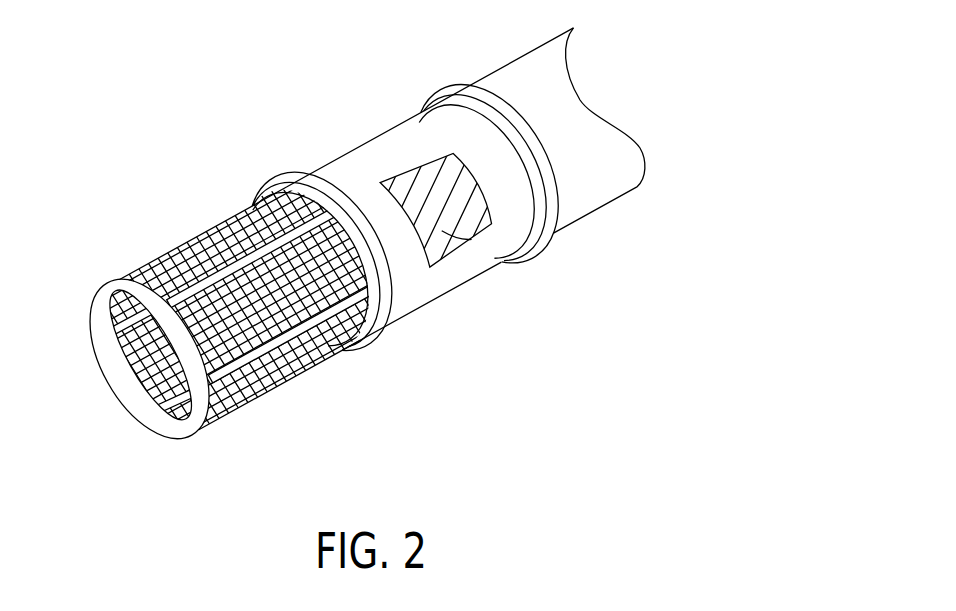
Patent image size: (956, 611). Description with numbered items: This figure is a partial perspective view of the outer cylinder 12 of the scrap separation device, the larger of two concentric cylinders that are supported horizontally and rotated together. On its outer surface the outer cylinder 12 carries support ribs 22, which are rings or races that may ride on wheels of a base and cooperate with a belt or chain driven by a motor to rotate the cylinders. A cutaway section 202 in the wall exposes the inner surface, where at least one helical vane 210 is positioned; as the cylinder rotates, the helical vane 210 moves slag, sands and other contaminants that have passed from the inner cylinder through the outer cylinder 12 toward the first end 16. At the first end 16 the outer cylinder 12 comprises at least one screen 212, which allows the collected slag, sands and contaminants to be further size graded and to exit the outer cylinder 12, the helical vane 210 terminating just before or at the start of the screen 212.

The outer cylinder 12 is at (360, 261).
The first end 16 is at (179, 434).
The support ribs 22 is at (291, 178).
The cutaway section 202 is at (404, 164).
The helical vane 210 is at (443, 238).
The screen 212 is at (278, 378).